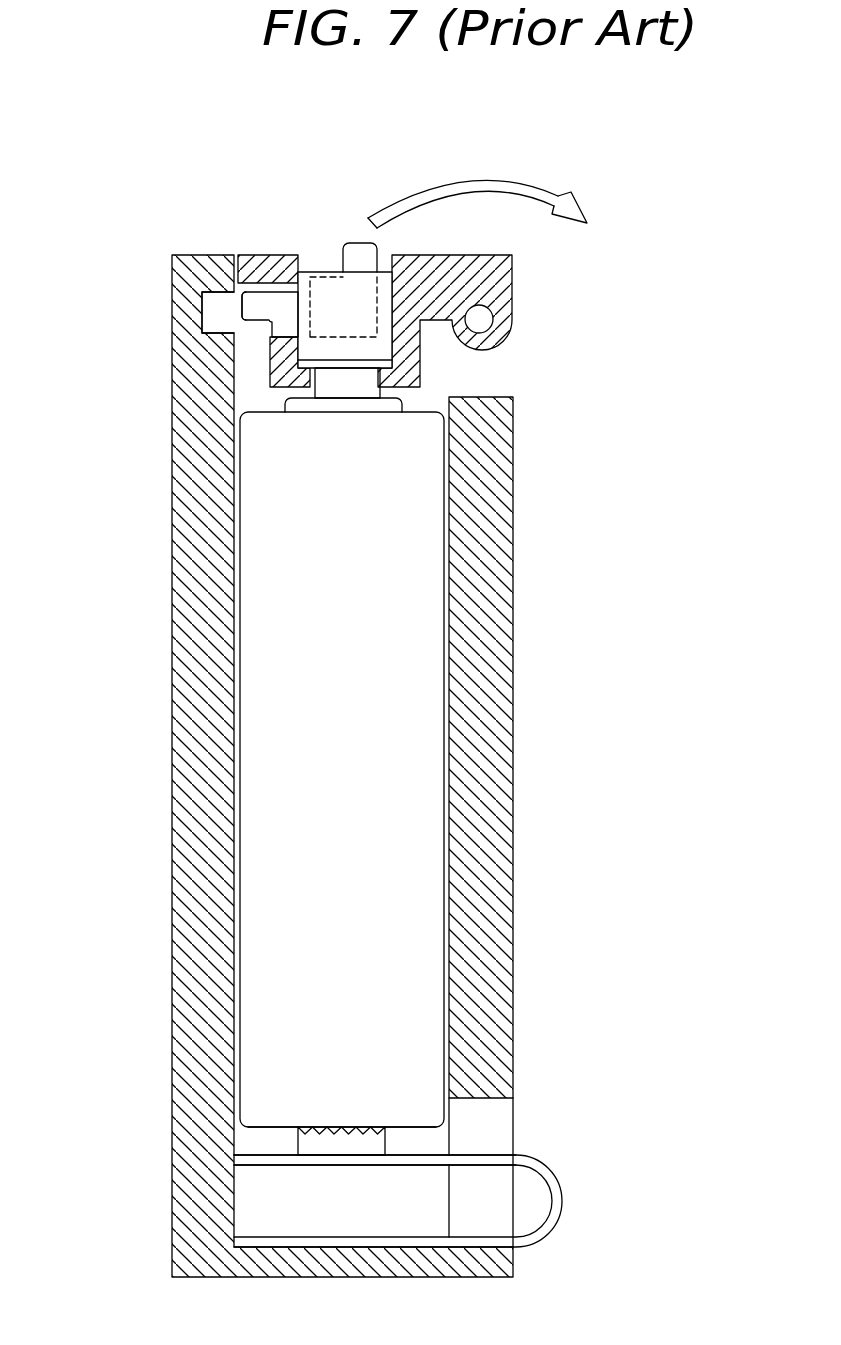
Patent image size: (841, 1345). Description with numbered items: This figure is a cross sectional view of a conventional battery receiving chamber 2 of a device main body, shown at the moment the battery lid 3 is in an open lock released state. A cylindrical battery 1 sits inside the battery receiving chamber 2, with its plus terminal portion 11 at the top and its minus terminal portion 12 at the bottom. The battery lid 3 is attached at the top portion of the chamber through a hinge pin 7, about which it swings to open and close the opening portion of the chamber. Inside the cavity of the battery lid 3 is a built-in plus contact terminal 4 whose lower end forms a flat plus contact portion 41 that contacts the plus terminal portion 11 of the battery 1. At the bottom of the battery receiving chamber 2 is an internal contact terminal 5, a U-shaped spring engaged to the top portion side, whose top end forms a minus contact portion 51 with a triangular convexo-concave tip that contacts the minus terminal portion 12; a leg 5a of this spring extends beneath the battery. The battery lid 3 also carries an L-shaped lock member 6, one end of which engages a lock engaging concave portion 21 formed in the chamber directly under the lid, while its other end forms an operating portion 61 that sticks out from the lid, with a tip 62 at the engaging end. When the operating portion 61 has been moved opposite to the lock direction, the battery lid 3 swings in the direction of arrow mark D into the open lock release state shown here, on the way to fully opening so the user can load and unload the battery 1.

The battery 1 is at (430, 805).
The battery receiving chamber 2 is at (190, 772).
The battery lid 3 is at (257, 265).
The plus contact terminal 4 is at (290, 367).
The internal contact terminal 5 is at (563, 1200).
The spring upper leg 5a is at (378, 1143).
The lock member 6 is at (288, 313).
The hinge pin 7 is at (480, 319).
The plus terminal portion 11 is at (403, 403).
The minus terminal portion 12 is at (270, 1127).
The lock engaging concave portion 21 is at (207, 322).
The plus contact portion 41 is at (355, 383).
The minus contact portion 51 is at (370, 1127).
The operating portion 61 is at (353, 250).
The nozzle outlet 62 is at (245, 302).
The arrow mark D is at (510, 170).